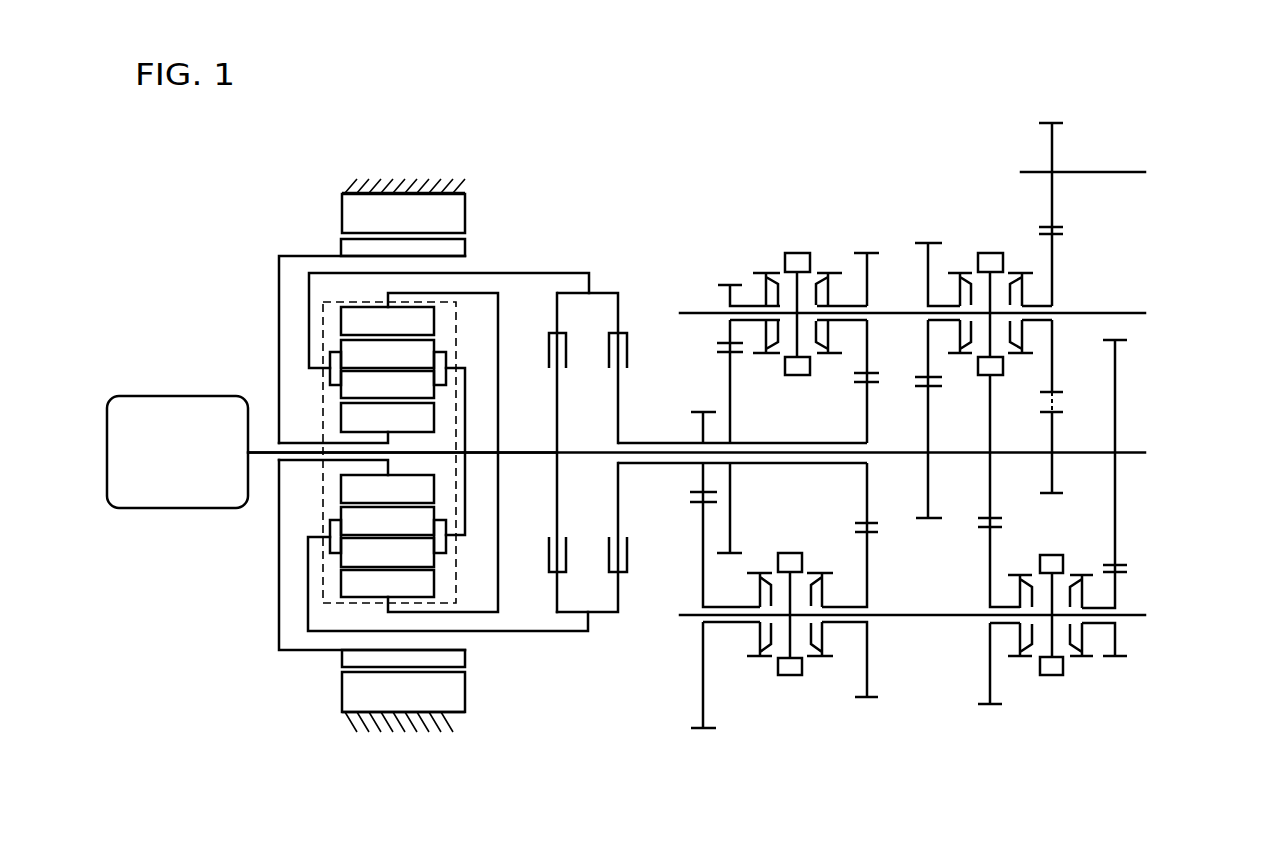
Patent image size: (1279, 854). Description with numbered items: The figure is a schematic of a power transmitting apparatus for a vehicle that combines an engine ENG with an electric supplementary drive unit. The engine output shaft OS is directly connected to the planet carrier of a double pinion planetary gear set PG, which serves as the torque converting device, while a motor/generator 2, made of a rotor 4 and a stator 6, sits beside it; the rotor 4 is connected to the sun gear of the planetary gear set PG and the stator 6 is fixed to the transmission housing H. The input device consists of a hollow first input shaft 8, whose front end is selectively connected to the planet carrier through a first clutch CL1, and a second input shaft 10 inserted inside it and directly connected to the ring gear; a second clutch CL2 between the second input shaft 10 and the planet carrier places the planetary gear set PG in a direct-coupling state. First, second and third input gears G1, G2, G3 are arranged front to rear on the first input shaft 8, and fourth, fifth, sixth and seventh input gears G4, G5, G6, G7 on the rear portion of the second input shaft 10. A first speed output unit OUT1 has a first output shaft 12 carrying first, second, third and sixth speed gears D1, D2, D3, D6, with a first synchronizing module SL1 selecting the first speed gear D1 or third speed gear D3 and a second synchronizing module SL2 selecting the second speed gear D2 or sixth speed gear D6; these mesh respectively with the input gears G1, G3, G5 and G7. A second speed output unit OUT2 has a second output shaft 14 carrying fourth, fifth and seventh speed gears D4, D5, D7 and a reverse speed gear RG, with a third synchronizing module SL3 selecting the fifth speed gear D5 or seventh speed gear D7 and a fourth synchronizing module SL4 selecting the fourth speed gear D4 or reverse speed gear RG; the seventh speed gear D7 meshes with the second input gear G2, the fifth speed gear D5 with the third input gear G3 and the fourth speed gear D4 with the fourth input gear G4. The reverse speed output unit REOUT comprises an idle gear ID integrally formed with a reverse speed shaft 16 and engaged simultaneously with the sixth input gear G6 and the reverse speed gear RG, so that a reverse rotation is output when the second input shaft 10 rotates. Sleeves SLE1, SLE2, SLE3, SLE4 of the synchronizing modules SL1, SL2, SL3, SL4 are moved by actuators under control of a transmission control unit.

The transmission housing H is at (437, 185).
The motor/generator 2 is at (443, 227).
The rotor 4 is at (429, 248).
The stator 6 is at (465, 213).
The engine ENG is at (177, 452).
The output shaft OS is at (305, 453).
The planetary gear set PG is at (382, 440).
The first clutch CL1 is at (636, 452).
The second clutch CL2 is at (539, 452).
The first input shaft 8 is at (640, 440).
The second input shaft 10 is at (652, 465).
The first output shaft 12 is at (930, 617).
The second output shaft 14 is at (1103, 312).
The reverse speed shaft 16 is at (1120, 171).
The first input gear G1 is at (703, 426).
The second input gear G2 is at (730, 413).
The third input gear G3 is at (867, 412).
The fourth input gear G4 is at (928, 418).
The fifth input gear G5 is at (992, 427).
The sixth input gear G6 is at (1052, 431).
The seventh input gear G7 is at (1115, 412).
The first speed gear D1 is at (703, 665).
The second speed gear D2 is at (990, 668).
The third speed gear D3 is at (868, 648).
The fourth speed gear D4 is at (925, 243).
The fifth speed gear D5 is at (867, 281).
The sixth speed gear D6 is at (1117, 640).
The seventh speed gear D7 is at (718, 290).
The first synchronizing module SL1 is at (808, 657).
The second synchronizing module SL2 is at (1069, 658).
The third synchronizing module SL3 is at (777, 275).
The fourth synchronizing module SL4 is at (972, 269).
The sleeve SLE1 is at (790, 677).
The sleeve SLE2 is at (1052, 677).
The sleeve SLE3 is at (802, 290).
The sleeve SLE4 is at (999, 290).
The idle gear ID is at (1052, 145).
The reverse speed gear RG is at (1052, 250).
The reverse speed output unit REOUT is at (1172, 120).
The first speed output unit OUT1 is at (1172, 533).
The second speed output unit OUT2 is at (1172, 232).